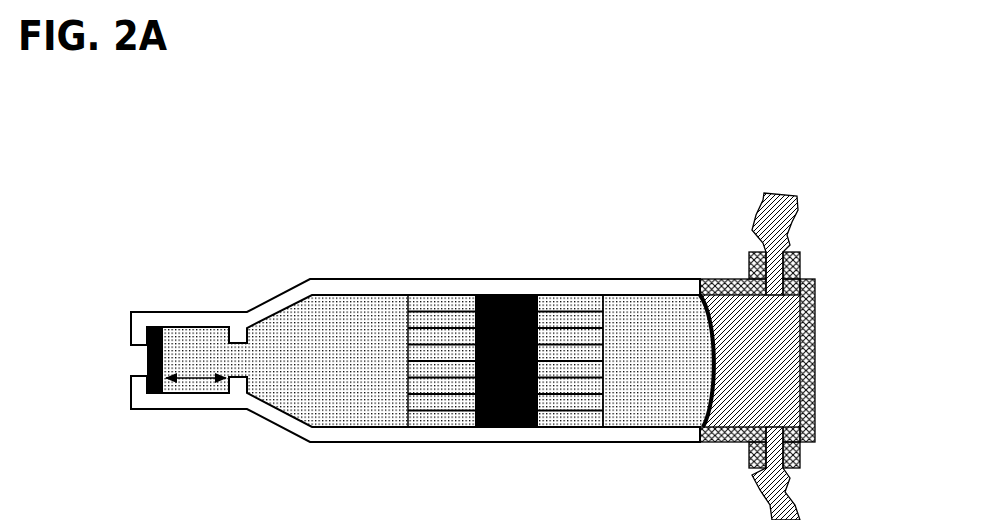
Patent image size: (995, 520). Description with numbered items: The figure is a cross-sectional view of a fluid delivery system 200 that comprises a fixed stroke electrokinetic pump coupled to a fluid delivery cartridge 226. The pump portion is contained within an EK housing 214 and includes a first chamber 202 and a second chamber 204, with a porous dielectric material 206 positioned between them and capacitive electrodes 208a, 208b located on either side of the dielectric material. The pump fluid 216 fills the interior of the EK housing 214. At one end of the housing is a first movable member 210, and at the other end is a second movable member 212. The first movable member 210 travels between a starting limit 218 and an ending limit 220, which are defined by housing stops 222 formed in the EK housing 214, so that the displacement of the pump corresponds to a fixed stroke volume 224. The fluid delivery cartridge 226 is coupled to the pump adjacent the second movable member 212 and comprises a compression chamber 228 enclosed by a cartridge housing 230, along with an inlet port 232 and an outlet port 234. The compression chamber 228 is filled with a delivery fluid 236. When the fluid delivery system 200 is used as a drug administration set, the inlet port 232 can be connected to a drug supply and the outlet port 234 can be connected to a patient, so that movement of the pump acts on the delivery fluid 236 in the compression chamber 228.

The fluid delivery system 200 is at (744, 84).
The first chamber 202 is at (357, 314).
The second chamber 204 is at (649, 310).
The porous dielectric material 206 is at (506, 295).
The capacitive electrode 208a is at (437, 410).
The capacitive electrode 208b is at (577, 410).
The first movable member 210 is at (167, 327).
The second movable member 212 is at (704, 294).
The EK housing 214 is at (617, 431).
The pump fluid 216 is at (438, 355).
The starting limit 218 is at (172, 382).
The ending limit 220 is at (225, 381).
The housing stops 222 is at (223, 328).
The fixed stroke volume 224 is at (200, 344).
The fluid delivery cartridge 226 is at (804, 247).
The compression chamber 228 is at (781, 387).
The cartridge housing 230 is at (723, 441).
The inlet port 232 is at (795, 193).
The outlet port 234 is at (787, 503).
The delivery fluid 236 is at (781, 323).